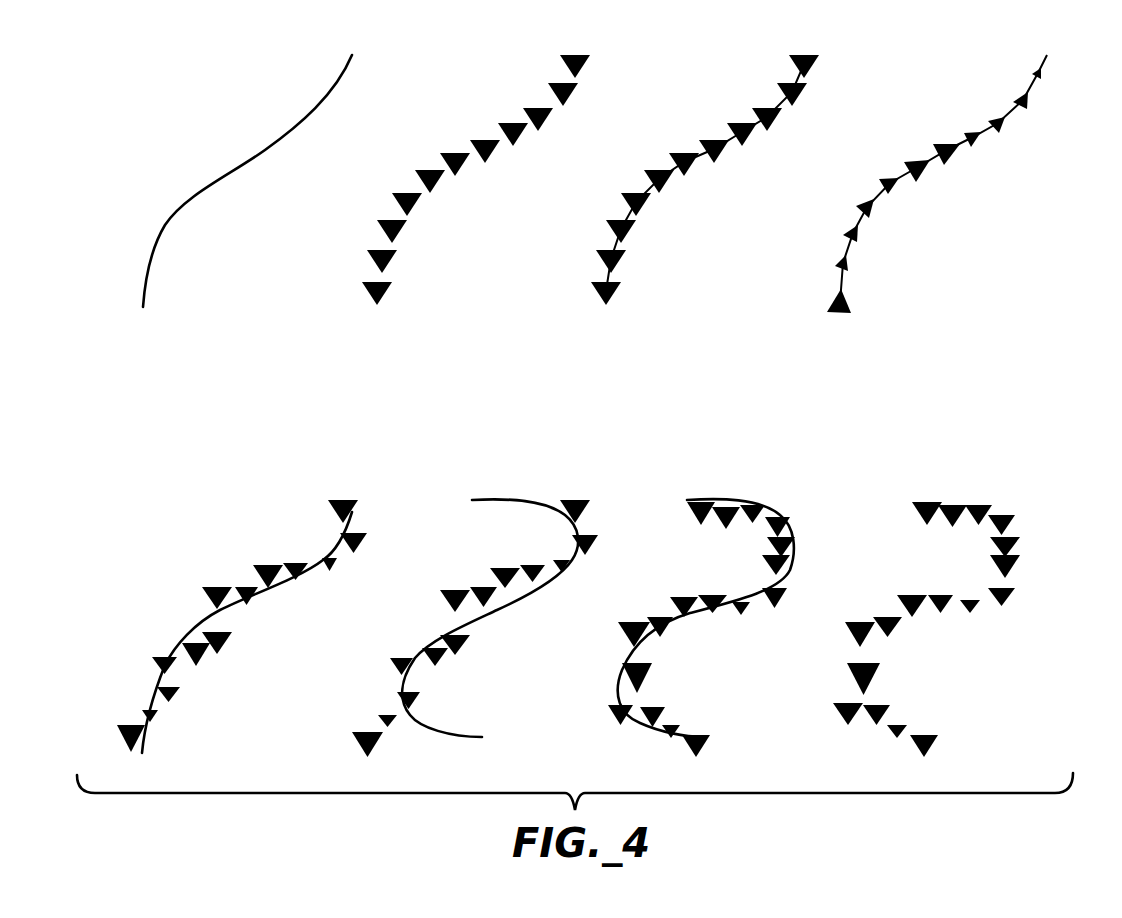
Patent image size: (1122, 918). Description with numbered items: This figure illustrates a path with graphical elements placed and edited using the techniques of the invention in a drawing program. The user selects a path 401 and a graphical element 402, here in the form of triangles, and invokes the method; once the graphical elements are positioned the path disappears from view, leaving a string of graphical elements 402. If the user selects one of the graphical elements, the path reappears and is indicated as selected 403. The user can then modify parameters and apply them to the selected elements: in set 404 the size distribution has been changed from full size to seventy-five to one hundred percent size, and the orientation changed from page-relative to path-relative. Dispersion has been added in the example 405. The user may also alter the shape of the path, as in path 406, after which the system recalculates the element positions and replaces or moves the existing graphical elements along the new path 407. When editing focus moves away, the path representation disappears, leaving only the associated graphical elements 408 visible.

The path 401 is at (191, 233).
The graphical element 402 is at (426, 231).
The selected path 403 is at (658, 231).
The set 404 is at (884, 231).
The dispersed graphical elements 405 is at (224, 673).
The altered path 406 is at (466, 673).
The new path 407 is at (696, 673).
The associated graphical elements 408 is at (906, 673).